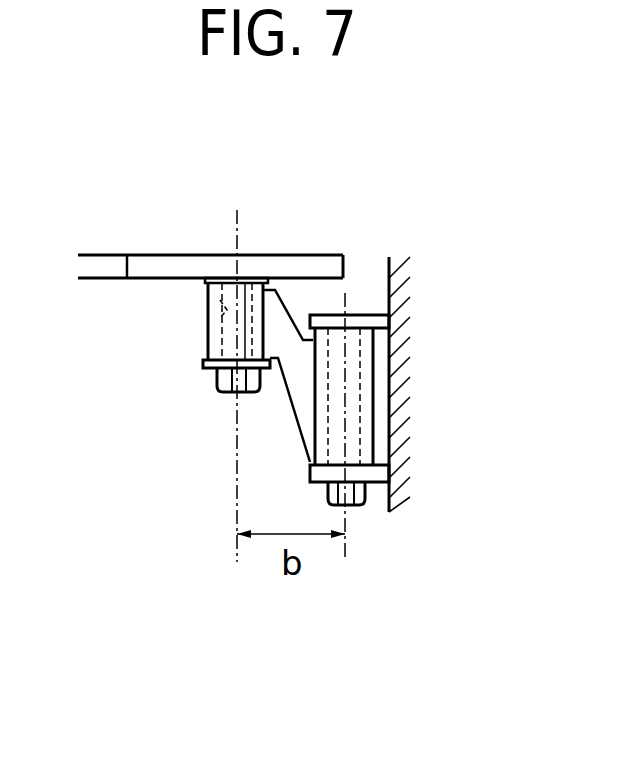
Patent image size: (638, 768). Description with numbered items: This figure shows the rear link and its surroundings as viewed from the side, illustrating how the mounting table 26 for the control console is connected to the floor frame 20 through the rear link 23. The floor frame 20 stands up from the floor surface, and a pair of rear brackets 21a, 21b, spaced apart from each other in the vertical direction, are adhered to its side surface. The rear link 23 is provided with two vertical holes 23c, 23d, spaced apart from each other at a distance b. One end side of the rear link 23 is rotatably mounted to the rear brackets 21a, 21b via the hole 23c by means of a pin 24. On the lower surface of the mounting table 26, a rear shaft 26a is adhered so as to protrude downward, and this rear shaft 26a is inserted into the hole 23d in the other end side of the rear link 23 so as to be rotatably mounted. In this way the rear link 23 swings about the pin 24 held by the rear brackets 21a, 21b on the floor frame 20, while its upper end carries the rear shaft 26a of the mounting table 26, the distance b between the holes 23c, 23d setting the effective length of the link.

The mounting table 26 is at (282, 254).
The floor frame 20 is at (375, 263).
The hole 23d is at (208, 302).
The rear shaft 26a is at (208, 345).
The rear link 23 is at (283, 390).
The rear bracket 21a is at (383, 333).
The hole 23c is at (356, 430).
The rear bracket 21b is at (385, 483).
The pin 24 is at (318, 432).